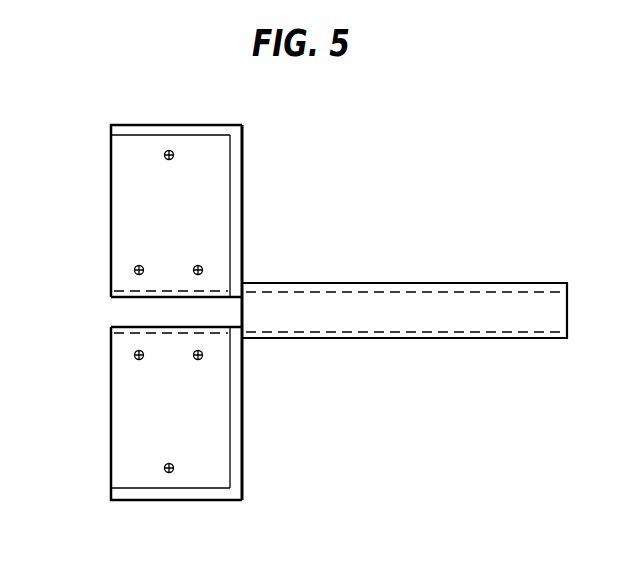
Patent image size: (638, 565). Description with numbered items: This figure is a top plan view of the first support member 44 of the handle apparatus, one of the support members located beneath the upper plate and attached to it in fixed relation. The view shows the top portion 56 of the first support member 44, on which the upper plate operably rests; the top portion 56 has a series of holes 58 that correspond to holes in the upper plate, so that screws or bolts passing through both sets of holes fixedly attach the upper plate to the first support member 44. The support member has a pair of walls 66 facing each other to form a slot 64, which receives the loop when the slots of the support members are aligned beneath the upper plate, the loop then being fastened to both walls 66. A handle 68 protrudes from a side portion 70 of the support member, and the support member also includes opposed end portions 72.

The first support member 44 is at (299, 186).
The top portion 56 is at (188, 221).
The holes 58 is at (194, 269).
The slot 64 is at (147, 312).
The walls 66 is at (114, 297).
The handle 68 is at (460, 283).
The side portion 70 is at (245, 243).
The end portions 72 is at (177, 135).